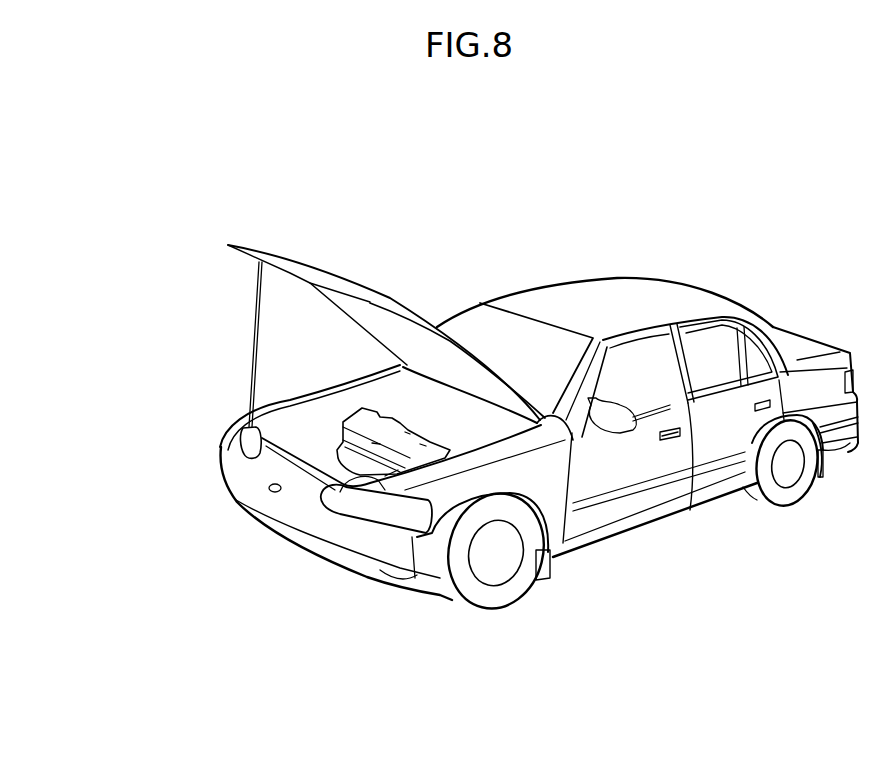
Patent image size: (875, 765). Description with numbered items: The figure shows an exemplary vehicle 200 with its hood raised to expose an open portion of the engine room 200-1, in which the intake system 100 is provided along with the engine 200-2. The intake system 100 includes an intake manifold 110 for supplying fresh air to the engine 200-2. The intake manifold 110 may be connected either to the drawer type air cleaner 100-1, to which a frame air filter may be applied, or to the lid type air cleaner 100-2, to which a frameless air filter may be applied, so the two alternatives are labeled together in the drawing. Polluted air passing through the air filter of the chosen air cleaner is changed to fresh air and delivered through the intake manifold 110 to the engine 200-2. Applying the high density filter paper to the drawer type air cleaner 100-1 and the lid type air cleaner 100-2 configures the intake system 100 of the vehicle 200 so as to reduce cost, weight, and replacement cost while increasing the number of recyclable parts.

The vehicle 200 is at (460, 472).
The engine room 200-1 is at (293, 433).
The engine 200-2 is at (412, 443).
The intake system 100 is at (318, 598).
The drawer type air cleaner 100-1 is at (372, 482).
The lid type air cleaner 100-2 is at (362, 484).
The intake manifold 110 is at (398, 462).